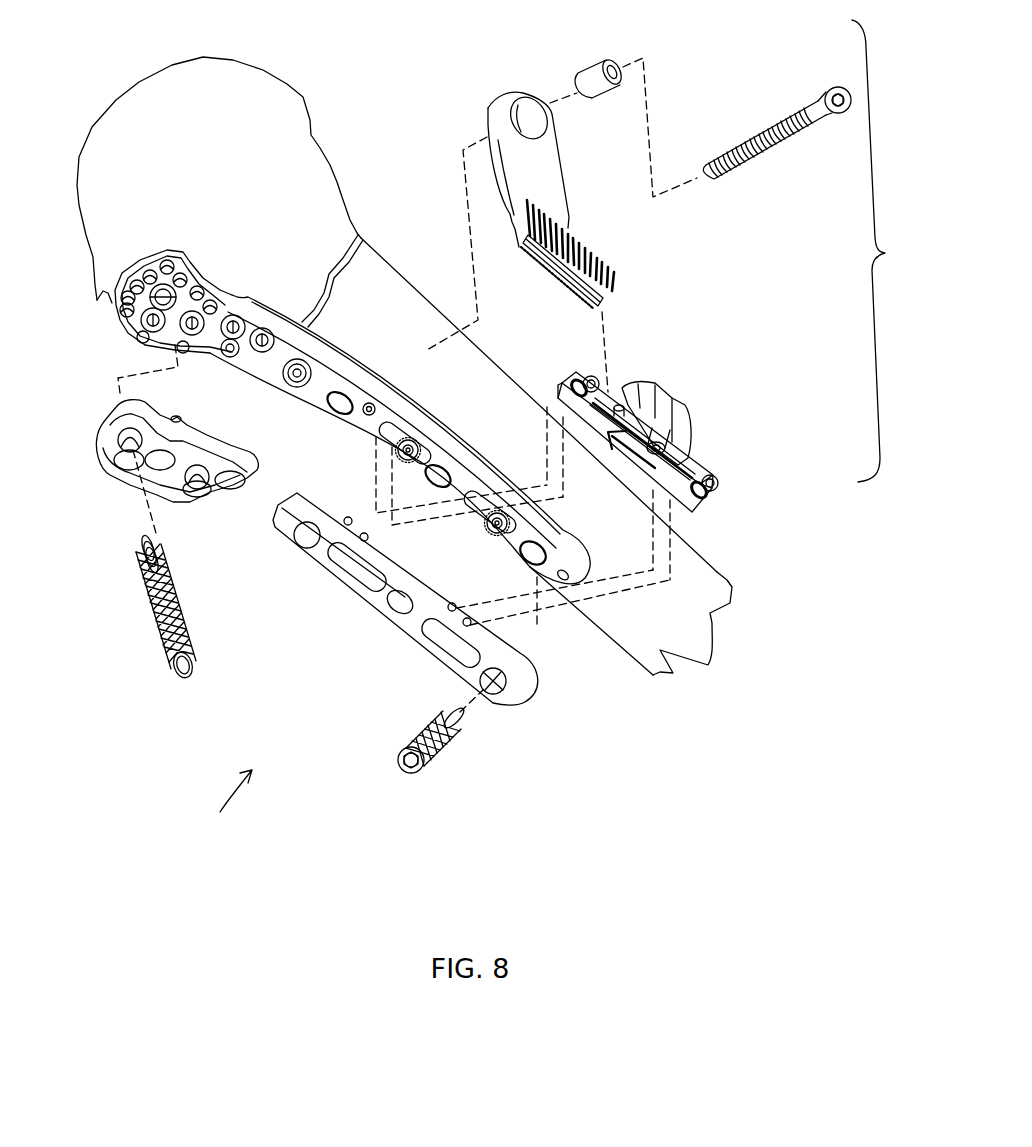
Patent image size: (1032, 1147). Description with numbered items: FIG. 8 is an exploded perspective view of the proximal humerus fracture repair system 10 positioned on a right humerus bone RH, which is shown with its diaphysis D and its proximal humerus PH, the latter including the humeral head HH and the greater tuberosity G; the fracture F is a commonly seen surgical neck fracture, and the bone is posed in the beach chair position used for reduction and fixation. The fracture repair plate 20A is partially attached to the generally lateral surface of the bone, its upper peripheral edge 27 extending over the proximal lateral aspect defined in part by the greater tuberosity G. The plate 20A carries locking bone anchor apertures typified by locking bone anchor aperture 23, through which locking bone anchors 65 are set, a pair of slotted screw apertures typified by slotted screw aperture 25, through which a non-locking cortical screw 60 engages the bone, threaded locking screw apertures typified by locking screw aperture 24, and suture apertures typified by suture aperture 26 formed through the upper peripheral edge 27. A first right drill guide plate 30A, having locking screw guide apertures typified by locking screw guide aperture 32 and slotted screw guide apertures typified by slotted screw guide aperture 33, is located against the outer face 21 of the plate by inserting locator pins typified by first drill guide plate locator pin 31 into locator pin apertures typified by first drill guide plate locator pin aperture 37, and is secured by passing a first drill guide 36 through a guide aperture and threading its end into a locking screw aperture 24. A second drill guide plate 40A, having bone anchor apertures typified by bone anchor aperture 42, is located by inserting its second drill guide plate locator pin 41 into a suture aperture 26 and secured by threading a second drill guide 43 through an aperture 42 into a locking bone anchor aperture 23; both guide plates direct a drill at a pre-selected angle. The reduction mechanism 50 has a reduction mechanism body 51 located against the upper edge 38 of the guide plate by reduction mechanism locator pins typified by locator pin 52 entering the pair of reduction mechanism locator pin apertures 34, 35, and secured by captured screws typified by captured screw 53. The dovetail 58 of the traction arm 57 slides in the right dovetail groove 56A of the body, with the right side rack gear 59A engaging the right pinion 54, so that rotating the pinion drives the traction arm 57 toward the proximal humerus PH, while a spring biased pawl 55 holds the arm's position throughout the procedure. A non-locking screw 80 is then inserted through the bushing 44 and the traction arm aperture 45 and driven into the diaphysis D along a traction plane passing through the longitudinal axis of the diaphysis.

The proximal humerus fracture repair system 10 is at (224, 809).
The fracture repair plate 20A is at (308, 394).
The outer face 21 is at (447, 447).
The locking bone anchor aperture 23 is at (135, 322).
The locking screw aperture 24 is at (540, 550).
The slotted screw aperture 25 is at (376, 424).
The suture aperture 26 is at (228, 298).
The upper peripheral edge 27 is at (144, 258).
The first right drill guide plate 30A is at (406, 624).
The first drill guide plate locator pin 31 is at (349, 520).
The locking screw guide aperture 32 is at (303, 540).
The slotted screw guide aperture 33 is at (354, 572).
The reduction mechanism locator pin aperture 34 is at (452, 605).
The pin hole 35 is at (468, 619).
The first drill guide 36 is at (466, 740).
The first drill guide plate locator pin aperture 37 is at (373, 403).
The upper edge 38 is at (518, 658).
The second drill guide plate 40A is at (104, 453).
The second drill guide plate locator pin 41 is at (174, 421).
The bone anchor aperture 42 is at (196, 492).
The second drill guide 43 is at (206, 668).
The bushing 44 is at (598, 76).
The traction arm aperture 45 is at (547, 120).
The reduction mechanism 50 is at (702, 266).
The reduction mechanism body 51 is at (574, 380).
The reduction mechanism locator pin 52 is at (654, 490).
The captured screw 53 is at (716, 475).
The right pinion 54 is at (688, 441).
The spring biased pawl 55 is at (652, 398).
The right dovetail groove 56A is at (618, 402).
The traction arm 57 is at (568, 195).
The dovetail 58 is at (554, 272).
The right side rack gear 59A is at (594, 256).
The non-locking cortical screw 60 is at (410, 438).
The locking bone anchors 65 is at (140, 341).
The non-locking screw 80 is at (760, 164).
The proximal humerus PH is at (125, 103).
The humeral head HH is at (290, 94).
The greater tuberosity G is at (104, 289).
The fracture F is at (342, 254).
The diaphysis D is at (717, 572).
The right humerus bone RH is at (616, 641).